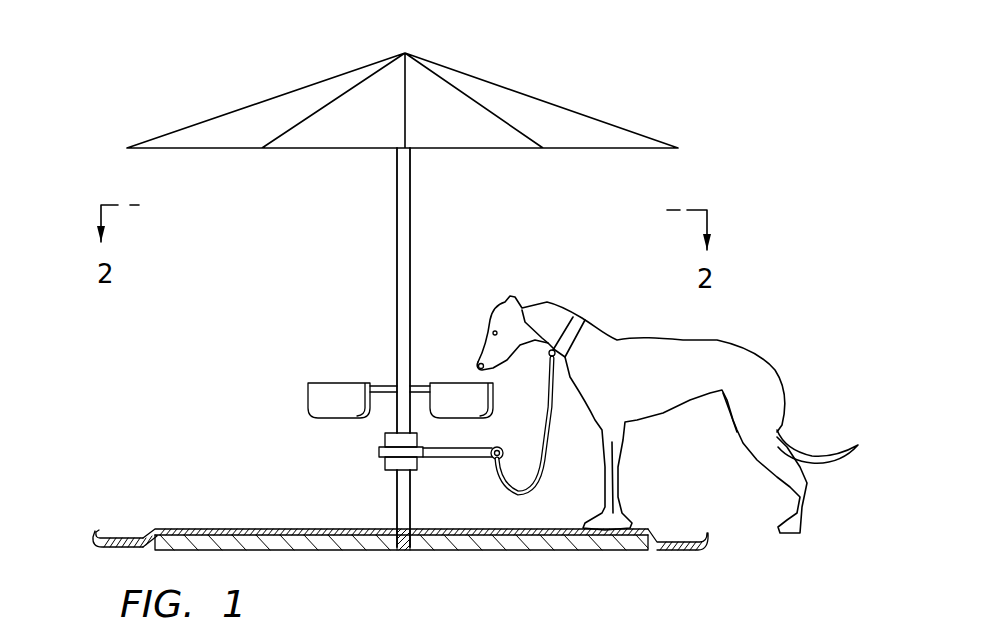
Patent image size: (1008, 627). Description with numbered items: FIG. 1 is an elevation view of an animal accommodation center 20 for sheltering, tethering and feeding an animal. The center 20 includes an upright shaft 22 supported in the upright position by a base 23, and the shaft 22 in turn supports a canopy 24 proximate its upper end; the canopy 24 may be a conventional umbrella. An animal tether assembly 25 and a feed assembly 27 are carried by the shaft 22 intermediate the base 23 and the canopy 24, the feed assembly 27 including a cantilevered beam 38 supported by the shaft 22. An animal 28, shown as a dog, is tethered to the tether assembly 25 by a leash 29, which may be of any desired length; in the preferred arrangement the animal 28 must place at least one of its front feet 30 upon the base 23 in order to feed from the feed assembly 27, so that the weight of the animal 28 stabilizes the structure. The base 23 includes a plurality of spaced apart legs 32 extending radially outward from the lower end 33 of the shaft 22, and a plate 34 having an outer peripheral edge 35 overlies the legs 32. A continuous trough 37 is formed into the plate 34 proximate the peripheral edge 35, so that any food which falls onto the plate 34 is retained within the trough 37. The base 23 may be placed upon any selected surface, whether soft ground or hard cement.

The animal accommodation center 20 is at (377, 536).
The shaft 22 is at (410, 270).
The base 23 is at (585, 552).
The canopy 24 is at (588, 118).
The animal tether assembly 25 is at (372, 447).
The feed assembly 27 is at (341, 379).
The animal 28 is at (720, 340).
The leash 29 is at (559, 460).
The front feet 30 is at (638, 512).
The legs 32 is at (533, 552).
The lower end 33 is at (405, 551).
The plate 34 is at (180, 528).
The outer peripheral edge 35 is at (92, 530).
The trough 37 is at (118, 538).
The cantilevered beam 38 is at (415, 383).